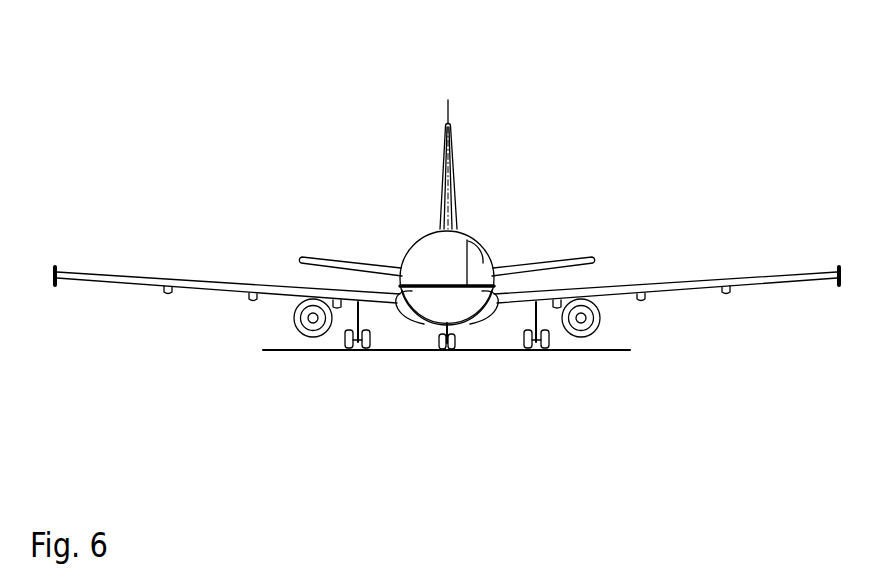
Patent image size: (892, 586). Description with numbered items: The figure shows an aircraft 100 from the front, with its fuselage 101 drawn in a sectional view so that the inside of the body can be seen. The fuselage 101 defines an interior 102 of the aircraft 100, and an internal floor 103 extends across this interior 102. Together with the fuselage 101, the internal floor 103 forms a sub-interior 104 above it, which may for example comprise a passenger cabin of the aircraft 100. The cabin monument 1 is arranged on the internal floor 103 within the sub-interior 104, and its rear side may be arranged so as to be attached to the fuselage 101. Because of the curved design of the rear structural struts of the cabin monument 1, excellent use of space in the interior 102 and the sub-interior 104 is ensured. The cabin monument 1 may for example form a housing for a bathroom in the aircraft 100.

The aircraft 100 is at (641, 103).
The fuselage 101 is at (426, 233).
The sub-interior 104 is at (457, 275).
The internal floor 103 is at (428, 291).
The cabin monument 1 is at (481, 263).
The interior 102 is at (463, 305).